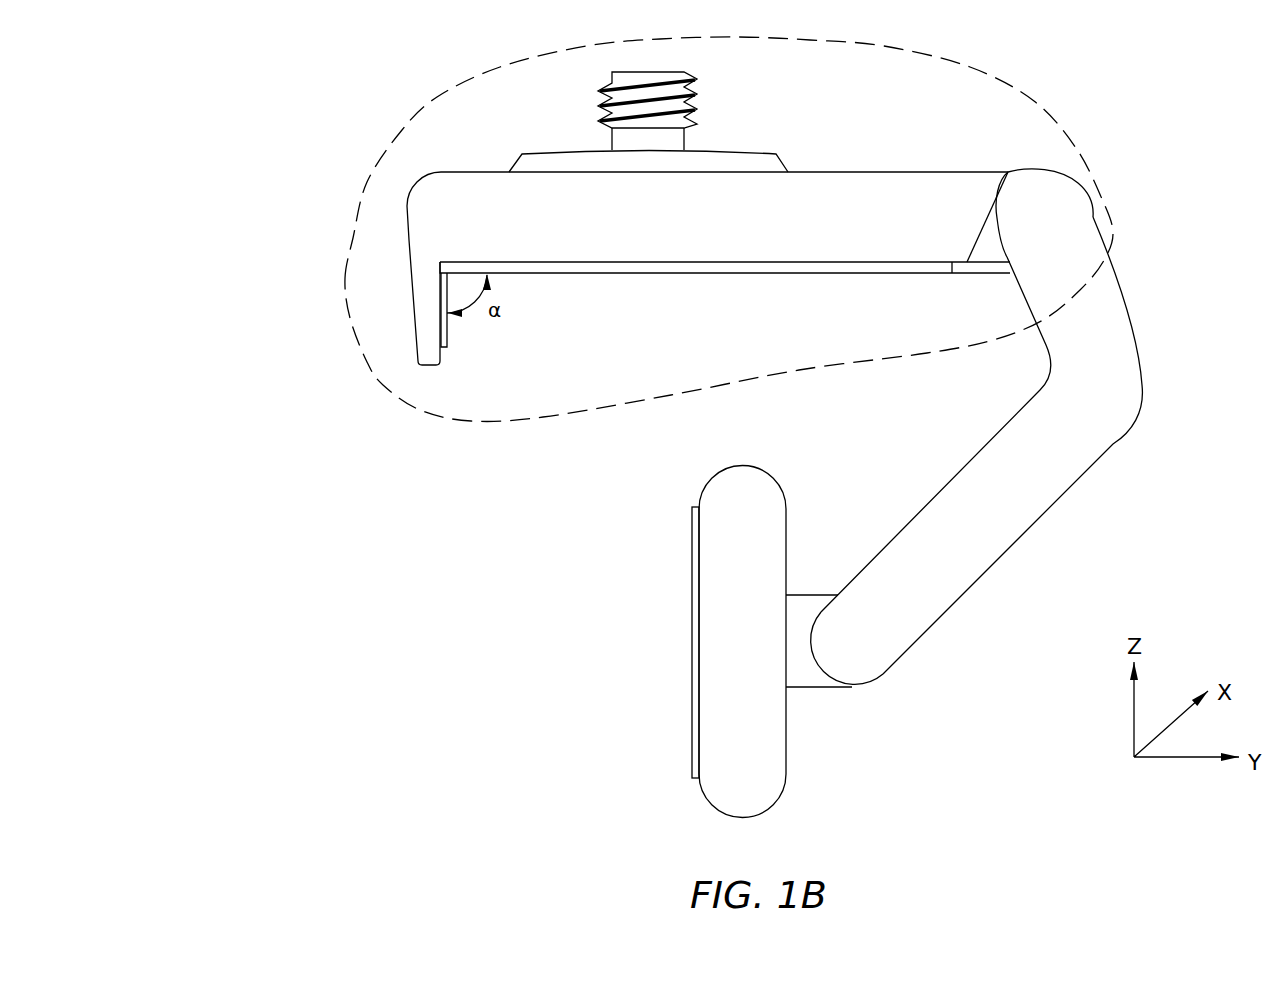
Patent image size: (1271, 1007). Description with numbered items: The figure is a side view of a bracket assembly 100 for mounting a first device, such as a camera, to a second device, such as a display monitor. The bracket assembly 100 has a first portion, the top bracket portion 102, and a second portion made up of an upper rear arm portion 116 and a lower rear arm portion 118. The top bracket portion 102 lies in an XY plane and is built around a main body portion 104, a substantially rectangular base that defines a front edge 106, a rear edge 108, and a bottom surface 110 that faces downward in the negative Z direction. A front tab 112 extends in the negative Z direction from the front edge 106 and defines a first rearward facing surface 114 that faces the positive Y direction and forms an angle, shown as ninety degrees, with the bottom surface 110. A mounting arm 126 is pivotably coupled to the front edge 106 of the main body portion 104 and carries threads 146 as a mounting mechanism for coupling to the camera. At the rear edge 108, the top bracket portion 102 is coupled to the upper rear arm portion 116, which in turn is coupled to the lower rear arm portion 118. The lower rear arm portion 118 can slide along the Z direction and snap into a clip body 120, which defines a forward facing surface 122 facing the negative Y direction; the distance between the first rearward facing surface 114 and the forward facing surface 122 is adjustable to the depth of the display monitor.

The bracket assembly 100 is at (223, 80).
The top bracket portion 102 is at (447, 95).
The main body portion 104 is at (862, 183).
The front edge 106 is at (415, 188).
The rear edge 108 is at (1032, 172).
The bottom surface 110 is at (672, 273).
The front tab 112 is at (412, 337).
The first rearward facing surface 114 is at (450, 335).
The upper rear arm portion 116 is at (1119, 346).
The lower rear arm portion 118 is at (808, 670).
The clip body 120 is at (758, 787).
The forward facing surface 122 is at (692, 660).
The mounting arm 126 is at (545, 152).
The threads 146 is at (690, 108).